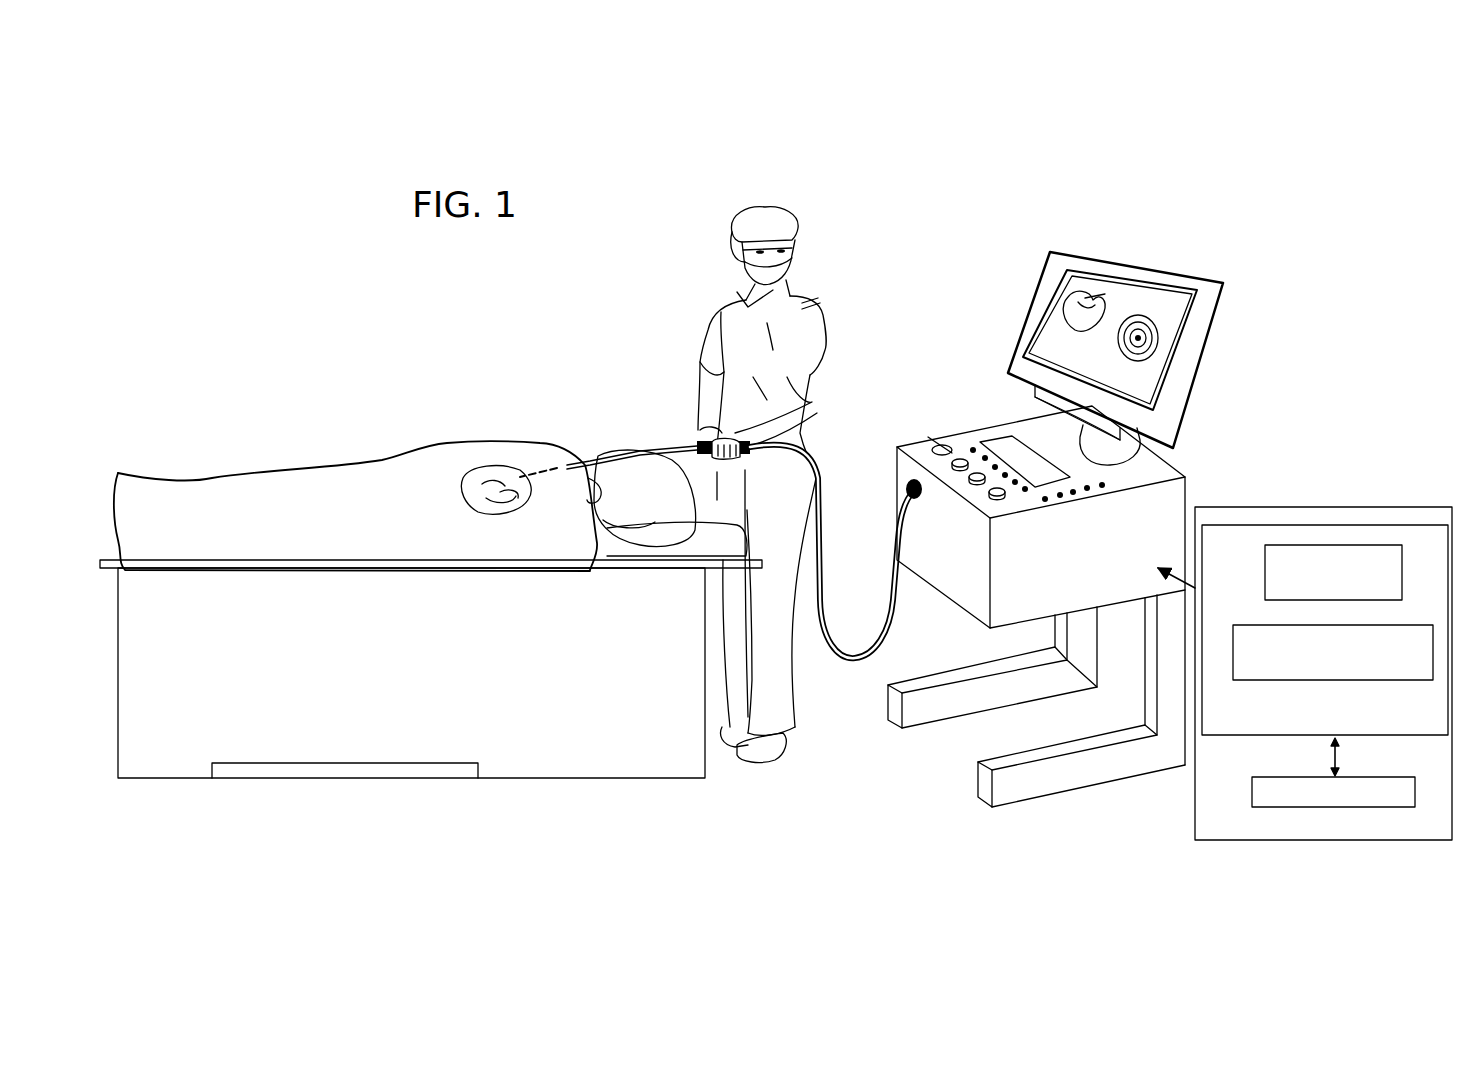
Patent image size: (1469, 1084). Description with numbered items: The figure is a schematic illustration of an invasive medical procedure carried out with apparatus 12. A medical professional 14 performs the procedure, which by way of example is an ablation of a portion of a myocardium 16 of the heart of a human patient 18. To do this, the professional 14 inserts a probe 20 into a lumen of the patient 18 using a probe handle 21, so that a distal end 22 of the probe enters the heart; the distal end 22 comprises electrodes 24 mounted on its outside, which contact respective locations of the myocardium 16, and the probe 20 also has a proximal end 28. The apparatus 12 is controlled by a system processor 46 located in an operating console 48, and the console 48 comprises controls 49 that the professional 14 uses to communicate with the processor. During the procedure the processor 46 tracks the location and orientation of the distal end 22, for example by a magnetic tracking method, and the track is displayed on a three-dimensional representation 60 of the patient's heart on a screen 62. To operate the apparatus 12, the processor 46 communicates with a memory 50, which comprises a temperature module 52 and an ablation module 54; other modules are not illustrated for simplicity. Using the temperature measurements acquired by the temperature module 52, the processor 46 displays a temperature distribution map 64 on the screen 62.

The apparatus 12 is at (915, 236).
The medical professional 14 is at (770, 213).
The myocardium 16 is at (477, 467).
The human patient 18 is at (208, 494).
The probe 20 is at (590, 460).
The probe handle 21 is at (700, 430).
The distal end 22 is at (517, 416).
The electrodes 24 is at (430, 416).
The proximal end 28 is at (893, 497).
The system processor 46 is at (1265, 807).
The operating console 48 is at (988, 425).
The controls 49 is at (942, 445).
The memory 50 is at (1220, 735).
The temperature module 52 is at (1418, 623).
The ablation module 54 is at (1403, 567).
The three-dimensional representation 60 is at (1075, 292).
The screen 62 is at (1225, 305).
The temperature distribution map 64 is at (1140, 318).